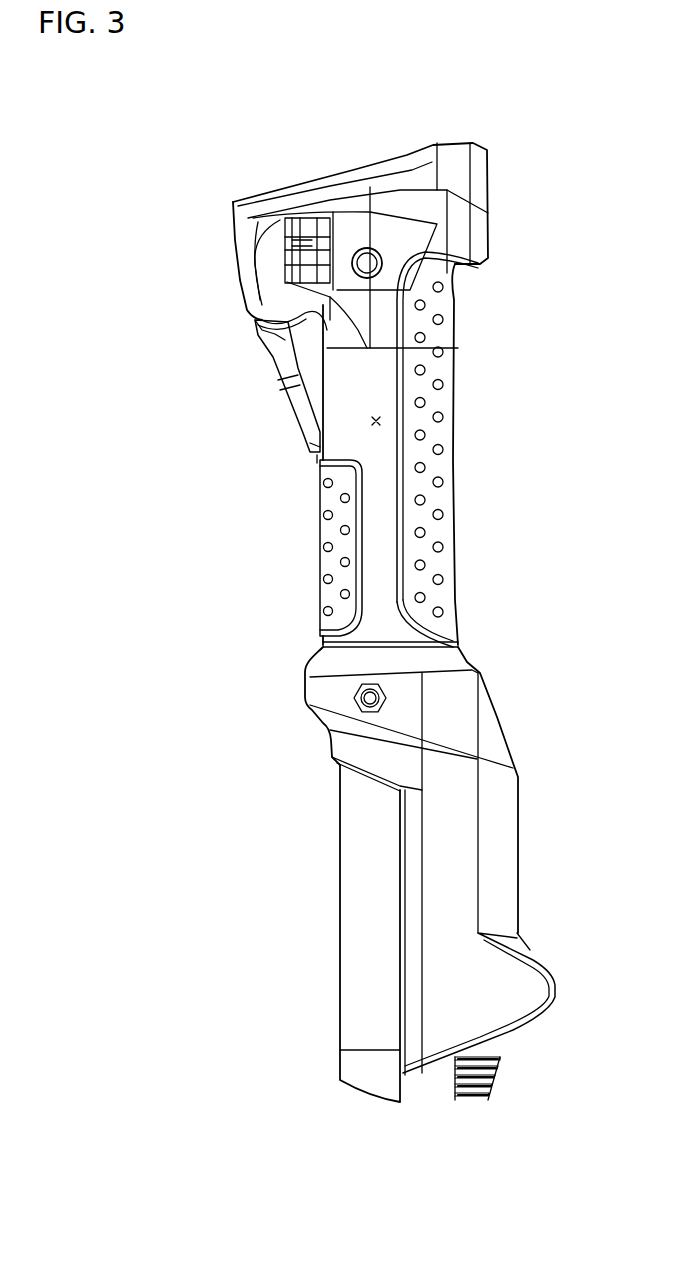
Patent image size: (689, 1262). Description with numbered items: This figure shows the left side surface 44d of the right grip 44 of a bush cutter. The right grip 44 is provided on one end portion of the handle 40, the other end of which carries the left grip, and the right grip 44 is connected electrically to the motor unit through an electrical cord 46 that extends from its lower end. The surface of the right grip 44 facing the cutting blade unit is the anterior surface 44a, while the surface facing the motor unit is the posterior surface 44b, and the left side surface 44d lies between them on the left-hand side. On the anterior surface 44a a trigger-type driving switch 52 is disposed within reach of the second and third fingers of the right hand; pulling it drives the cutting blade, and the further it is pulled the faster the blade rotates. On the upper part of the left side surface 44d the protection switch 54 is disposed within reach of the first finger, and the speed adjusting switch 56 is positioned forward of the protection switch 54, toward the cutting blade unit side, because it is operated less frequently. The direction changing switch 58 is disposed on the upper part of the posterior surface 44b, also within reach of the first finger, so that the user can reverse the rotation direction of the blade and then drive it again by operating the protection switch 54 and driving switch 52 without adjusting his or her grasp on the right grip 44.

The handle 40 is at (340, 973).
The right grip 44 is at (433, 449).
The anterior surface 44a is at (305, 522).
The posterior surface 44b is at (457, 453).
The left side surface 44d is at (378, 421).
The electrical cord 46 is at (500, 1060).
The driving switch 52 is at (270, 357).
The protection switch 54 is at (465, 273).
The speed adjusting switch 56 is at (280, 254).
The direction changing switch 58 is at (490, 206).